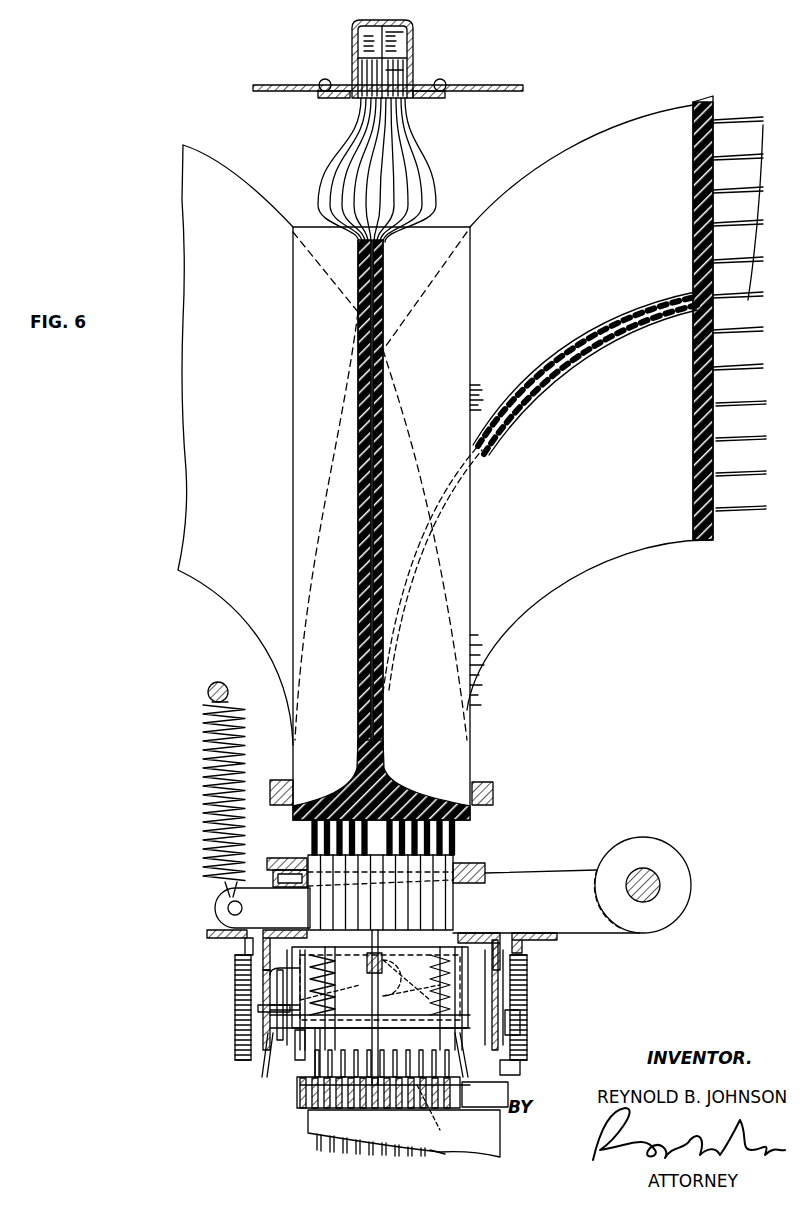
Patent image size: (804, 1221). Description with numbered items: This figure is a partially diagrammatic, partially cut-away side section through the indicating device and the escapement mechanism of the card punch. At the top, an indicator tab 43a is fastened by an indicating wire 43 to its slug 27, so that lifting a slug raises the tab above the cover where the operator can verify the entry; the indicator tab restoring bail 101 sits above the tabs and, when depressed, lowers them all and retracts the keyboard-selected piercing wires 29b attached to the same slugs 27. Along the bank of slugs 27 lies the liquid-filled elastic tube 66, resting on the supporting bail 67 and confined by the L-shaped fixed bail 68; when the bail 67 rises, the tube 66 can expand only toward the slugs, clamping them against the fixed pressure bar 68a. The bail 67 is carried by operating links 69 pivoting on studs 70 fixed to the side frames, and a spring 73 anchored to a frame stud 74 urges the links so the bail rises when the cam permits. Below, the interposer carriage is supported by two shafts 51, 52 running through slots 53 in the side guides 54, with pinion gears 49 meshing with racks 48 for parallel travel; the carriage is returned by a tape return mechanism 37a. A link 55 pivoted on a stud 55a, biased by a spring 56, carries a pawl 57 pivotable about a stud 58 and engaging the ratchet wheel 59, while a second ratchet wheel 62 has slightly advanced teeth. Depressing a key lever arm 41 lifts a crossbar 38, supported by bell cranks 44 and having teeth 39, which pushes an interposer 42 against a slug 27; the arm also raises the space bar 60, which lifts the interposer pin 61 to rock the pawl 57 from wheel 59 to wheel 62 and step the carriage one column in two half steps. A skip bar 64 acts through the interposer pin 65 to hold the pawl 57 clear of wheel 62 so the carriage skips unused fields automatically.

The indicator tab restoring bail 101 is at (352, 37).
The indicator tab 43a is at (393, 76).
The indicating wire 43 is at (418, 200).
The piercing wire 29b is at (718, 132).
The slug 27 is at (405, 808).
The stud 74 is at (209, 687).
The spring 73 is at (200, 783).
The elastic tube 66 is at (278, 858).
The fixed bail 68 is at (306, 868).
The fixed pressure bar 68a is at (486, 873).
The supporting bail 67 is at (230, 890).
The operating link 69 is at (228, 908).
The stud 70 is at (656, 878).
The rack 48 is at (207, 934).
The pawl 57 is at (300, 972).
The support shaft 52 is at (243, 992).
The pinion gear 49 is at (240, 1000).
The ratchet wheel 62 is at (272, 1010).
The tape return mechanism 37a is at (283, 1020).
The side guide 54 is at (275, 1050).
The support shaft 51 is at (503, 1020).
The interposer 42 is at (340, 1032).
The stud 58 is at (330, 1097).
The skip bar 64 is at (312, 1118).
The teeth 39 is at (318, 1150).
The crossbar 38 is at (408, 1112).
The key lever arm 41 is at (443, 1152).
The link 55 is at (440, 1128).
The stud 55a is at (456, 945).
The space bar 60 is at (462, 1097).
The bell crank 44 is at (515, 1075).
The ratchet wheel 59 is at (512, 1040).
The slot 53 is at (505, 1005).
The spring 56 is at (528, 968).
The interposer pin 61 is at (500, 950).
The interposer pin 65 is at (300, 1040).